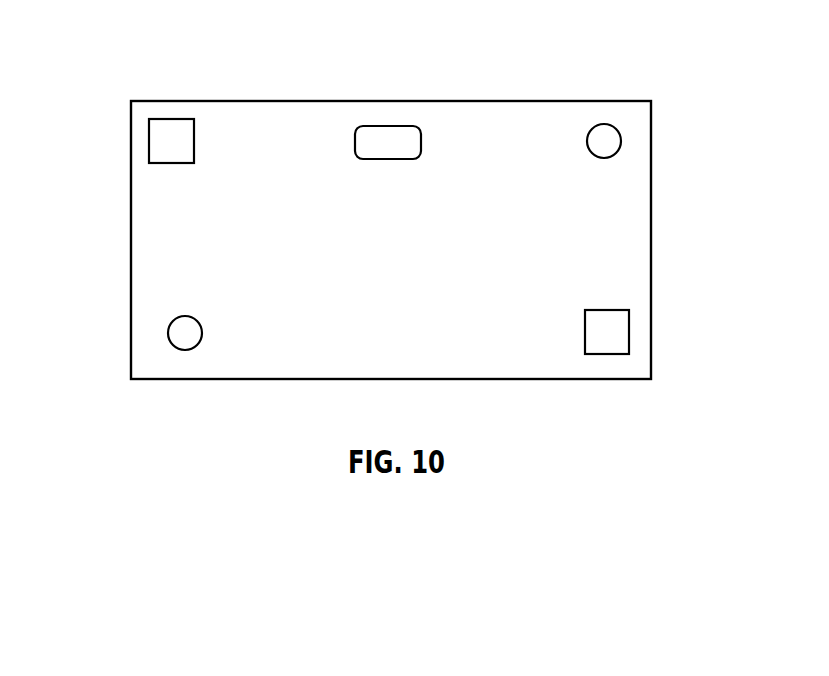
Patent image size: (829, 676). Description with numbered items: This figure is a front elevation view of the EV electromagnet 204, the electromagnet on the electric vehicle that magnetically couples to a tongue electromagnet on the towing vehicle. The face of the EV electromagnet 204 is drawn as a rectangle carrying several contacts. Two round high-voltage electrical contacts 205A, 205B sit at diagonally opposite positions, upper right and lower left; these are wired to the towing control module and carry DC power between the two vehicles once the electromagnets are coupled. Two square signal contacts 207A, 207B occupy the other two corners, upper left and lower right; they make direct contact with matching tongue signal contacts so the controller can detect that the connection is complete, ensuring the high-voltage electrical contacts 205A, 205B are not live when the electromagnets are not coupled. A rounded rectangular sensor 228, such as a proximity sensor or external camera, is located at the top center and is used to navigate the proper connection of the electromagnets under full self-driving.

The EV electromagnet 204 is at (269, 101).
The signal contact 207A is at (162, 144).
The signal contact 207B is at (618, 340).
The high-voltage electrical contact 205A is at (601, 137).
The high-voltage electrical contact 205B is at (185, 337).
The sensor 228 is at (391, 136).